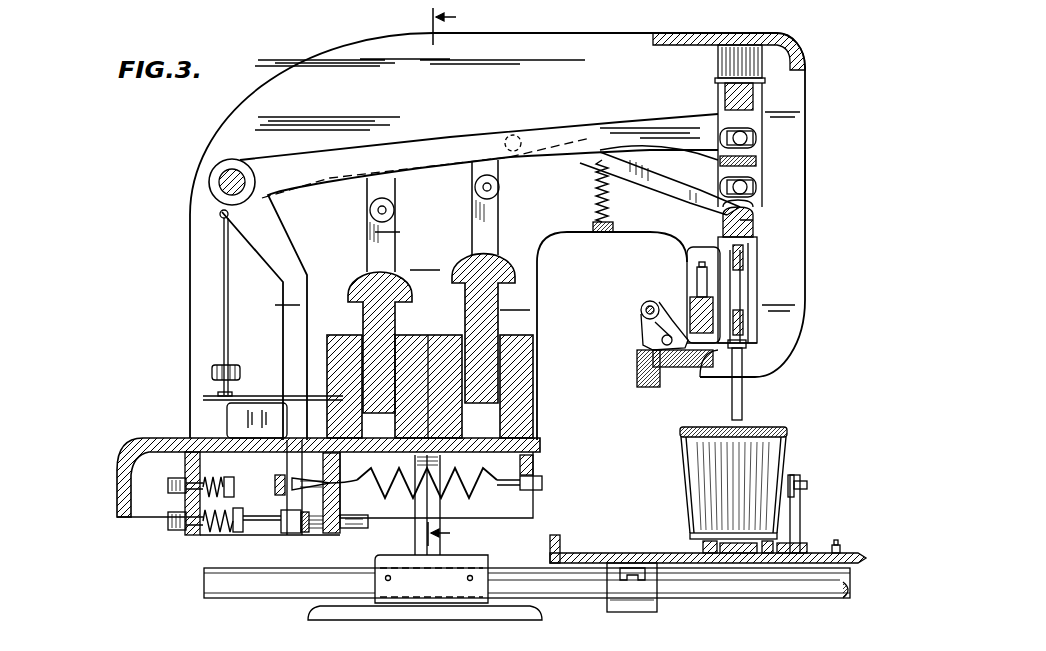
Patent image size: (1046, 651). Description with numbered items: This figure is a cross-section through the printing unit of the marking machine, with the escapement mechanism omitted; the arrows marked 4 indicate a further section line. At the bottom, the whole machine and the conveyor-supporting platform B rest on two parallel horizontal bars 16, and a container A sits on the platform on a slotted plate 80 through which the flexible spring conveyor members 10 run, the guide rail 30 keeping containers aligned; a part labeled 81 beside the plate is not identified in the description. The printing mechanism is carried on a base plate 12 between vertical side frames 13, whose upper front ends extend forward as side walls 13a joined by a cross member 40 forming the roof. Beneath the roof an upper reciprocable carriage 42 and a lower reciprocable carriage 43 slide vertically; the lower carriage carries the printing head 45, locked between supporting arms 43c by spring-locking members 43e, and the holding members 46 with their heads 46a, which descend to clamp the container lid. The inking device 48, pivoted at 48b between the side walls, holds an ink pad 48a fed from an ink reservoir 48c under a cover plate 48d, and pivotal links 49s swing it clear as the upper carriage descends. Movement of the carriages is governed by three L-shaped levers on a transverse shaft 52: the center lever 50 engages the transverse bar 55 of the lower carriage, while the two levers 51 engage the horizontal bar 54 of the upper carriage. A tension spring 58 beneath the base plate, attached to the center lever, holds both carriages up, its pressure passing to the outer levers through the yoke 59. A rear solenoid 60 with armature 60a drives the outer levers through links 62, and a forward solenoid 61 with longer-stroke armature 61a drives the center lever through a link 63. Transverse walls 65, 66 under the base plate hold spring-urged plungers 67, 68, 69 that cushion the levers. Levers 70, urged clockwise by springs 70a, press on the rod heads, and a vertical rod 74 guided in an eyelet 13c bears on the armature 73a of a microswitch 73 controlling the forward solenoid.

The section line 4 is at (451, 279).
The flexible spring members 10 is at (755, 553).
The base plate 12 is at (144, 440).
The side frames 13 is at (294, 78).
The side walls 13a is at (803, 176).
The eyelet 13c is at (240, 366).
The bars 16 is at (576, 594).
The guide rail 30 is at (798, 495).
The cross member 40 is at (716, 33).
The upper reciprocable carriage 42 is at (745, 97).
The lower reciprocable carriage 43 is at (756, 234).
The supporting arms 43c is at (687, 258).
The spring-locking member 43e is at (696, 276).
The printing head 45 is at (744, 347).
The holding member 46 is at (746, 408).
The head 46a is at (723, 217).
The inking device 48 is at (709, 476).
The ink pad 48a is at (700, 368).
The pivot 48b is at (645, 311).
The ink reservoir 48c is at (656, 388).
The cover plate 48d is at (661, 343).
The pivotal links 49s is at (688, 302).
The center lever 50 is at (463, 143).
The levers 51 is at (653, 128).
The transverse shaft 52 is at (228, 183).
The horizontal bar 54 is at (757, 139).
The transverse bar 55 is at (757, 186).
The tension spring 58 is at (478, 490).
The yoke 59 is at (282, 483).
The solenoid 60 is at (335, 335).
The armature 60a is at (394, 288).
The solenoid 61 is at (447, 334).
The armature 61a is at (492, 273).
The links 62 is at (394, 247).
The link 63 is at (497, 221).
The wall 65 is at (193, 538).
The wall 66 is at (333, 534).
The spring-urged plunger 67 is at (210, 532).
The spring-urged plunger 68 is at (309, 534).
The spring-urged plunger 69 is at (211, 478).
The lever 70 is at (650, 183).
The springs 70a is at (598, 181).
The electrical microswitch 73 is at (234, 426).
The armature 73a is at (343, 402).
The vertical rod 74 is at (228, 301).
The slotted plate 80 is at (822, 563).
The spacer 81 is at (768, 555).
The containers A is at (786, 472).
The platform B is at (571, 556).